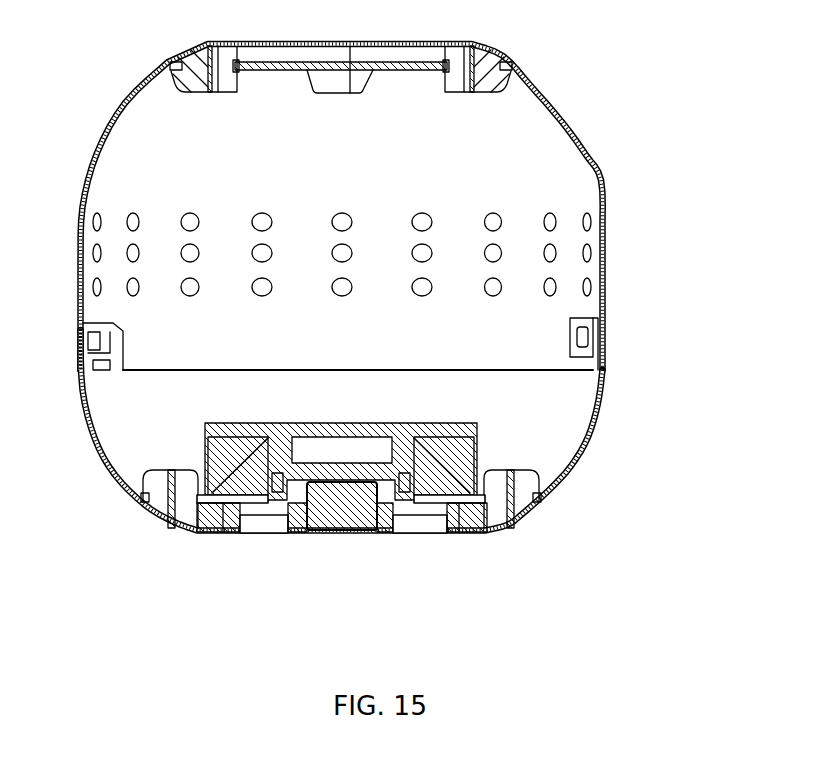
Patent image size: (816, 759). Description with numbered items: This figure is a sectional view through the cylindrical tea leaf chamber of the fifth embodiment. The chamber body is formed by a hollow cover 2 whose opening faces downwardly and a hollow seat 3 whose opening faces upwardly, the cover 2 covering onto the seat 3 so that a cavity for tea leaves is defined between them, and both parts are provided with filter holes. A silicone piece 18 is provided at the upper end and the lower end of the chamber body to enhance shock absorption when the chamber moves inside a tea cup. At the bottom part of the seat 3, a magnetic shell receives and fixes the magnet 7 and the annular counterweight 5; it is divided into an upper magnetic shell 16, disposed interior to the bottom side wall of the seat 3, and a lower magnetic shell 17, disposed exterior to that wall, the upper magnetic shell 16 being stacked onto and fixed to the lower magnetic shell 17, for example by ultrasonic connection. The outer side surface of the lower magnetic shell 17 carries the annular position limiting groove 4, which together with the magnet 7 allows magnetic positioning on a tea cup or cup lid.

The cover 2 is at (563, 165).
The seat 3 is at (540, 395).
The annular position limiting groove 4 is at (418, 525).
The counterweight 5 is at (330, 503).
The magnet 7 is at (457, 500).
The upper magnetic shell 16 is at (250, 497).
The lower magnetic shell 17 is at (297, 510).
The silicone piece 18 is at (503, 87).